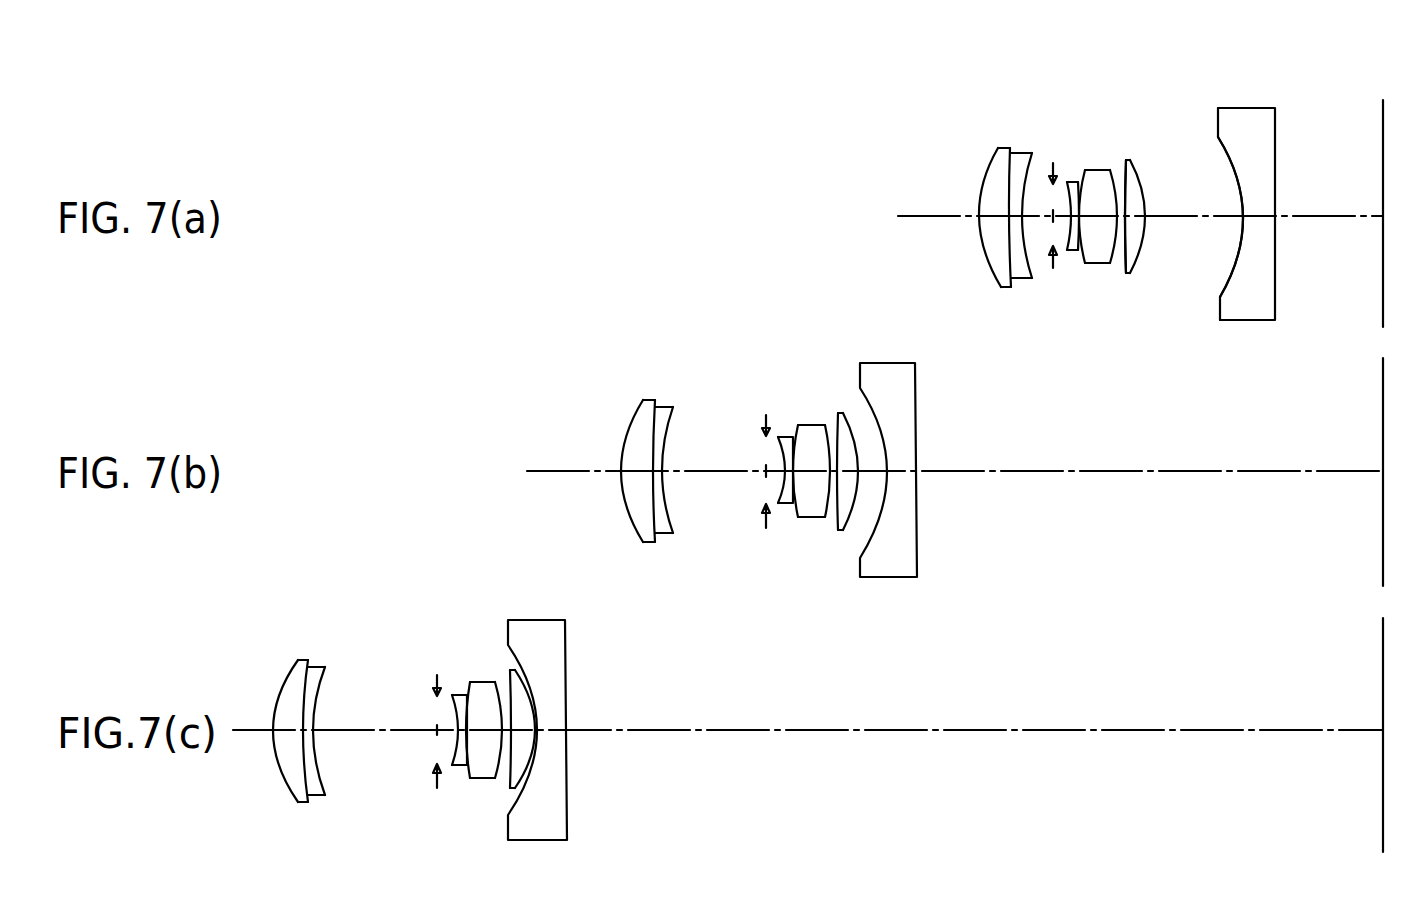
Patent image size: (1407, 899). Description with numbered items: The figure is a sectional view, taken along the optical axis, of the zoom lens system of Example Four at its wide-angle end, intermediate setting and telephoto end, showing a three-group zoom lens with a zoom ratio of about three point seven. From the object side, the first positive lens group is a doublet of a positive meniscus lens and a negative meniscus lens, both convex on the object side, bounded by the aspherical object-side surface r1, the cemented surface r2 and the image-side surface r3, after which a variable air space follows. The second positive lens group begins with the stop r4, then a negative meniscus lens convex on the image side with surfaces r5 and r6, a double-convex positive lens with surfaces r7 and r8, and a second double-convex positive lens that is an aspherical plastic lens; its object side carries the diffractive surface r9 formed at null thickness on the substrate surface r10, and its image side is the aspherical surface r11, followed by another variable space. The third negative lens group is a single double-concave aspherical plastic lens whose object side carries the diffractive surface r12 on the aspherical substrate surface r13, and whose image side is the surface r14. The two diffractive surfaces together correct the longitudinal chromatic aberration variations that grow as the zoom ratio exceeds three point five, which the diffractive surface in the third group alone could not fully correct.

The first lens surface r1 is at (992, 162).
The second lens surface r2 is at (1008, 148).
The third lens surface r3 is at (1032, 152).
The stop r4 is at (1052, 192).
The fifth lens surface r5 is at (1071, 182).
The sixth lens surface r6 is at (1078, 182).
The seventh lens surface r7 is at (1087, 170).
The eighth lens surface r8 is at (1112, 170).
The diffractive surface r9 is at (1125, 165).
The tenth lens surface r10 is at (1125, 216).
The eleventh lens surface r11 is at (1138, 172).
The diffractive surface r12 is at (1227, 148).
The thirteenth lens surface r13 is at (1230, 217).
The fourteenth lens surface r14 is at (1277, 137).